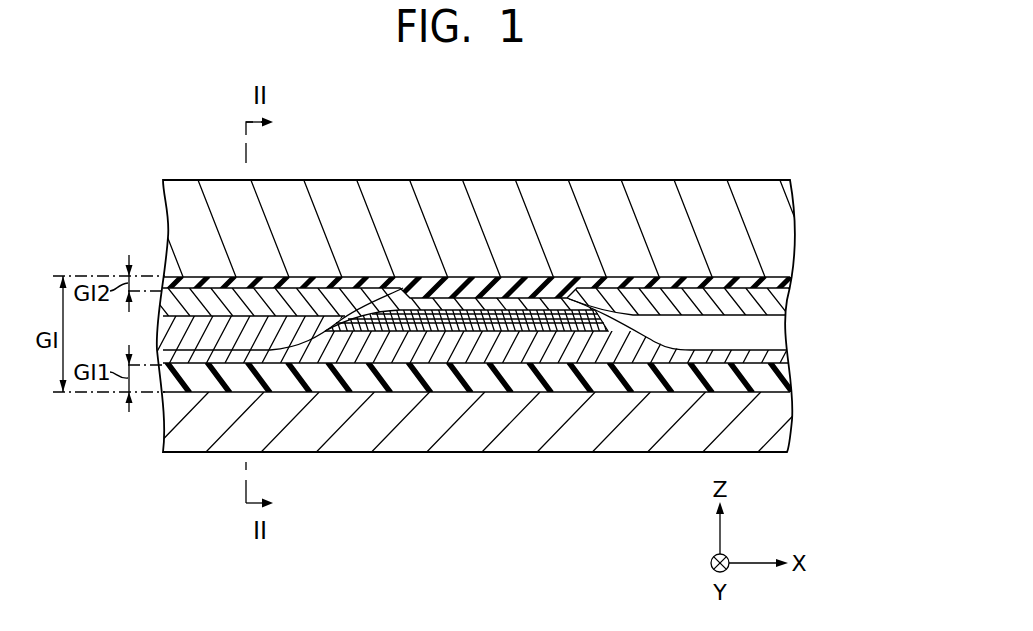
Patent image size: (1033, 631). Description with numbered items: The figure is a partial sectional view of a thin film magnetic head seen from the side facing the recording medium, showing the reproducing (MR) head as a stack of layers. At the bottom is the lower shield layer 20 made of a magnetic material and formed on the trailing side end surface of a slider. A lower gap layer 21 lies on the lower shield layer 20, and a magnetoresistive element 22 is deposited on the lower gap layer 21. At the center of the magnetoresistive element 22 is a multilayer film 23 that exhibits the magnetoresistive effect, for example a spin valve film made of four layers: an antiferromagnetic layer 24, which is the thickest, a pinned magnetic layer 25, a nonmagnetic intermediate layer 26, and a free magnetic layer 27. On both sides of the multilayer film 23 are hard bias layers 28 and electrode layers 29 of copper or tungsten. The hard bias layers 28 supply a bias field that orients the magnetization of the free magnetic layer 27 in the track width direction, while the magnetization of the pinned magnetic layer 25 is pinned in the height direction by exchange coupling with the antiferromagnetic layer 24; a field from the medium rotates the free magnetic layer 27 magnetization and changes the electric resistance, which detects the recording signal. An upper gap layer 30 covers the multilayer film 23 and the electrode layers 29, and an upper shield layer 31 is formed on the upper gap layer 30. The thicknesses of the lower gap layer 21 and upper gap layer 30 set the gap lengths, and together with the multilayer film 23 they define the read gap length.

The lower shield layer 20 is at (662, 420).
The lower gap layer 21 is at (492, 395).
The magnetoresistive element 22 is at (541, 283).
The multilayer film 23 is at (581, 358).
The antiferromagnetic layer 24 is at (398, 352).
The pinned magnetic layer 25 is at (410, 326).
The nonmagnetic intermediate layer 26 is at (449, 318).
The free magnetic layer 27 is at (498, 312).
The hard bias layers 28 is at (783, 328).
The electrode layers 29 is at (782, 297).
The upper gap layer 30 is at (785, 277).
The upper shield layer 31 is at (705, 232).